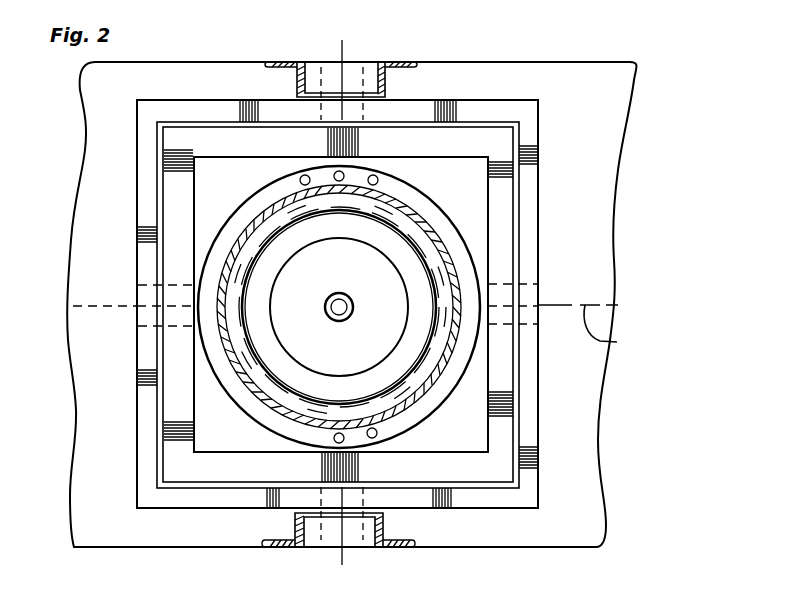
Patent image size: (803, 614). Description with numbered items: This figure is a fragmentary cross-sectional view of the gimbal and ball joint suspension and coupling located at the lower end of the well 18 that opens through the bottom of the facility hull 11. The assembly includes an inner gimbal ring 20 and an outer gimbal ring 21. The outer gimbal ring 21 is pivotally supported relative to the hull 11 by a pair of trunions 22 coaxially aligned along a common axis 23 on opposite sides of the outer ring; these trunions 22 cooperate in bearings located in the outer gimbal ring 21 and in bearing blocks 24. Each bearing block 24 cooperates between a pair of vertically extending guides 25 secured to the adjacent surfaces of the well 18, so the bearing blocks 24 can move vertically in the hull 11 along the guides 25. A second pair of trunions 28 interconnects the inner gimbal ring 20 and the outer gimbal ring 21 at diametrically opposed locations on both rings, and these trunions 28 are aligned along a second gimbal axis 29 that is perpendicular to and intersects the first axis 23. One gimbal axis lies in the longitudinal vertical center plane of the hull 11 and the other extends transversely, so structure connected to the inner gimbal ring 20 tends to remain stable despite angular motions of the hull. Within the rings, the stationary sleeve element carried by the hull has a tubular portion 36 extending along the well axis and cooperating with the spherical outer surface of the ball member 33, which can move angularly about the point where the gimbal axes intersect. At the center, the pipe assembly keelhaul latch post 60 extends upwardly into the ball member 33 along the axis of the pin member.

The hull 11 is at (528, 61).
The well 18 is at (580, 62).
The inner gimbal ring 20 is at (505, 438).
The outer gimbal ring 21 is at (530, 127).
The trunions 22 is at (365, 108).
The common axis 23 is at (342, 565).
The bearing blocks 24 is at (312, 66).
The guides 25 is at (396, 68).
The trunions 28 is at (146, 333).
The second gimbal axis 29 is at (618, 342).
The ball member 33 is at (415, 245).
The tubular portion 36 is at (225, 270).
The pipe assembly keelhaul latch post 60 is at (325, 312).